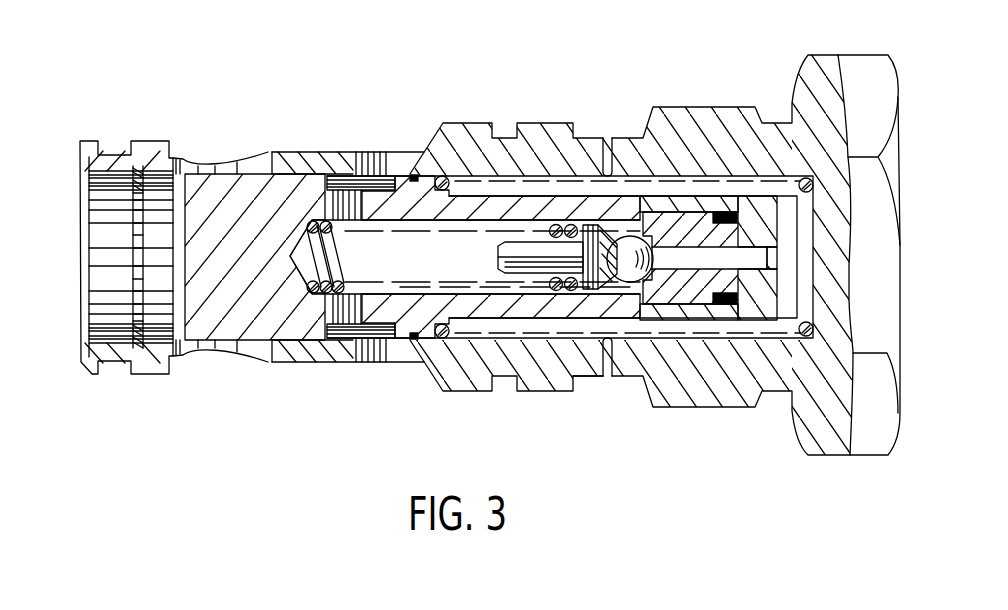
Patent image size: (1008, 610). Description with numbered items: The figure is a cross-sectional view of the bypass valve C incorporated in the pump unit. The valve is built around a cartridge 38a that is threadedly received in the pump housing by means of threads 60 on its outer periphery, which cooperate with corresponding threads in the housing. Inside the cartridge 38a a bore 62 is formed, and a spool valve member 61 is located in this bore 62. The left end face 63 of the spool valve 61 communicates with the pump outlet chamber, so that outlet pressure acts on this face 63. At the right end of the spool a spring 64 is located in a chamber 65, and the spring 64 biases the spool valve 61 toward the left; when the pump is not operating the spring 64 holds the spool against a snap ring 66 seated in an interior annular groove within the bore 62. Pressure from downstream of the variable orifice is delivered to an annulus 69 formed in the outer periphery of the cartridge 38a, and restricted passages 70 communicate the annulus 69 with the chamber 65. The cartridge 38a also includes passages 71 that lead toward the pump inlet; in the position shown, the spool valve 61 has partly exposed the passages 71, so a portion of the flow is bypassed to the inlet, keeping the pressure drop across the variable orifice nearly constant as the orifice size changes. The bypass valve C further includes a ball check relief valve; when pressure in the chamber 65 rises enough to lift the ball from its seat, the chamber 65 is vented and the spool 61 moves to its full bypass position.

The cartridge 38a is at (320, 152).
The threads 60 is at (705, 408).
The spool valve member 61 is at (300, 327).
The bore 62 is at (162, 333).
The left end face 63 is at (185, 282).
The spring 64 is at (447, 338).
The chamber 65 is at (778, 322).
The snap ring 66 is at (140, 340).
The annulus 69 is at (593, 377).
The restricted passages 70 is at (607, 140).
The passage 71 is at (221, 160).
The bypass valve C is at (514, 58).